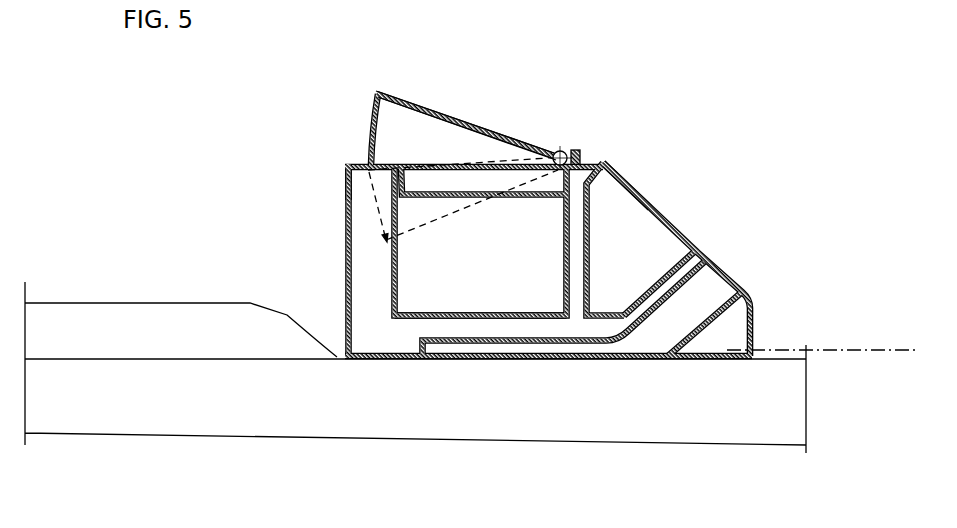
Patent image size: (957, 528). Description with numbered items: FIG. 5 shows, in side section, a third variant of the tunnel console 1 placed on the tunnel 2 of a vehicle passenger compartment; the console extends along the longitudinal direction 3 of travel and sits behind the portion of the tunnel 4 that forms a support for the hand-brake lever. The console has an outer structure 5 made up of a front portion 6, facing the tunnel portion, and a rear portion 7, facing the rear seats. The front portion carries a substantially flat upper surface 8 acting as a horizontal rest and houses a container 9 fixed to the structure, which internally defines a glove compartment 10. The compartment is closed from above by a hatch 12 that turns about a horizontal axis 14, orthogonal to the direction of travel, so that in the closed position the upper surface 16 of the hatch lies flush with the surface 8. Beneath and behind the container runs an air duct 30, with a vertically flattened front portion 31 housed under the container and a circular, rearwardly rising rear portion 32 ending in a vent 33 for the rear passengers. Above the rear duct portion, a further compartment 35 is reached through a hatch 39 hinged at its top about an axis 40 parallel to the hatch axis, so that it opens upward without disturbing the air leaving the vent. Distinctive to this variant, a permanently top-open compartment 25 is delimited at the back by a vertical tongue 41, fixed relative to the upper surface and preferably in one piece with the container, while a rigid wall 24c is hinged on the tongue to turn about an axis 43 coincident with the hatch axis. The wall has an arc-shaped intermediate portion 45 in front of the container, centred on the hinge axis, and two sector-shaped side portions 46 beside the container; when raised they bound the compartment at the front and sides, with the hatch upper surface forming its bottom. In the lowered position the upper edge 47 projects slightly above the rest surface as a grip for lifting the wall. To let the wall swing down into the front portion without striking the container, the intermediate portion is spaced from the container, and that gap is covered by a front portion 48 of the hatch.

The tunnel console 1 is at (661, 100).
The tunnel 2 is at (284, 361).
The longitudinal direction 3 is at (877, 350).
The portion of the tunnel 4 is at (223, 318).
The outer structure 5 is at (600, 160).
The front portion 6 is at (345, 220).
The rear portion 7 is at (697, 252).
The upper surface 8 is at (353, 160).
The container 9 is at (418, 318).
The glove compartment 10 is at (431, 291).
The hatch 12 is at (468, 185).
The axis 14 is at (595, 120).
The upper surface of the hatch 16 is at (511, 147).
The rigid wall 24c is at (438, 111).
The compartment 25 is at (500, 153).
The air duct 30 is at (596, 364).
The front portion of the air duct 31 is at (560, 358).
The rear portion of the air duct 32 is at (700, 285).
The vent 33 is at (745, 295).
The compartment 35 is at (651, 243).
The hatch 39 is at (647, 200).
The axis 40 is at (606, 175).
The vertical tongue 41 is at (580, 157).
The axis 43 is at (565, 148).
The intermediate portion 45 is at (372, 118).
The side portions 46 is at (471, 126).
The upper edge 47 is at (450, 117).
The front portion of the hatch 48 is at (373, 165).